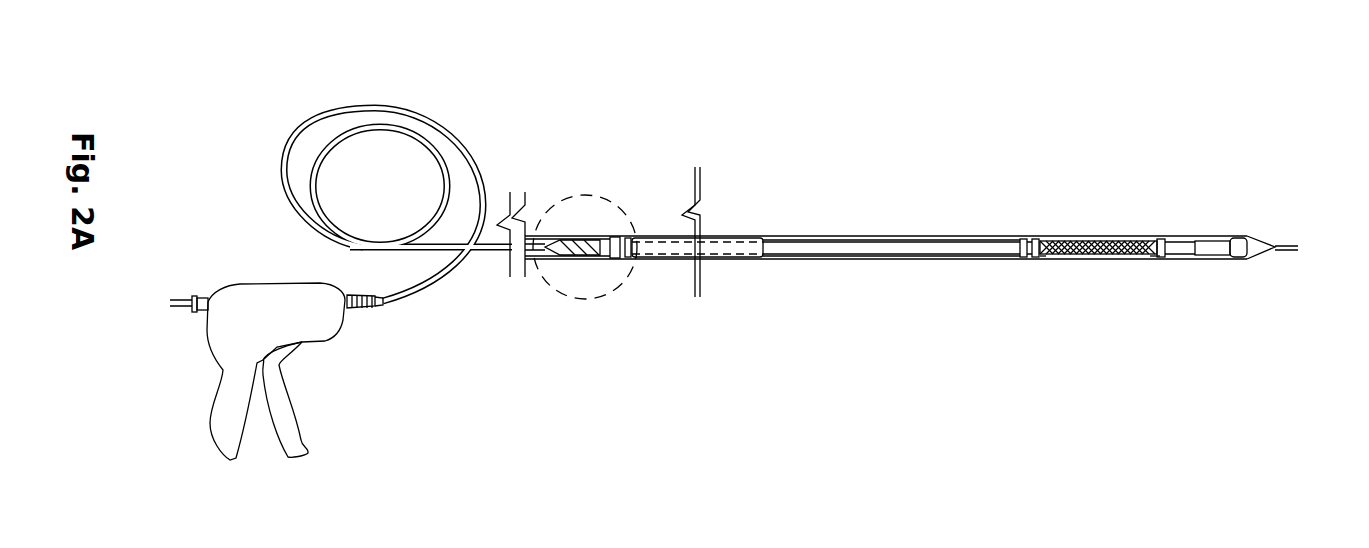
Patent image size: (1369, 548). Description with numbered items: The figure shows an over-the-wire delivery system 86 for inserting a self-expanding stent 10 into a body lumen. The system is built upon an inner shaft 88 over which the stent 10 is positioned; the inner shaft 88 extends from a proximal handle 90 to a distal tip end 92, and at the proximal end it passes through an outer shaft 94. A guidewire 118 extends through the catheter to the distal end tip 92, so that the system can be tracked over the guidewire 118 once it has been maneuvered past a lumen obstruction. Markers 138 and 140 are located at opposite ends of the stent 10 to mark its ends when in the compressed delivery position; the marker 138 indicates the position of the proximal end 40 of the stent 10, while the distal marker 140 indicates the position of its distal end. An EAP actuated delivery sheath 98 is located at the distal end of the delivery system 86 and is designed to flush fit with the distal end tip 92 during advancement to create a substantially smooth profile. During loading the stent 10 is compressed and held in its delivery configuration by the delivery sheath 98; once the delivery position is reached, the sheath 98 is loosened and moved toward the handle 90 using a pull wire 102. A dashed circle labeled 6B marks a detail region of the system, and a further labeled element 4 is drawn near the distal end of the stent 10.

The outer shaft 94 is at (431, 120).
The guidewire 118 is at (180, 298).
The proximal handle 90 is at (319, 323).
The over-the-wire delivery system 86 is at (705, 336).
The detail region of FIG. 6B is at (586, 190).
The pull wire 102 is at (598, 238).
The EAP actuated delivery sheath 98 is at (729, 236).
The marker 138 is at (1020, 234).
The self-expanding stent 10 is at (1110, 237).
The distal marker 140 is at (1160, 236).
The inner shaft 88 is at (1182, 243).
The distal tip end 92 is at (1258, 235).
The proximal end 40 is at (1043, 259).
The distal end of stent 4 is at (1158, 259).